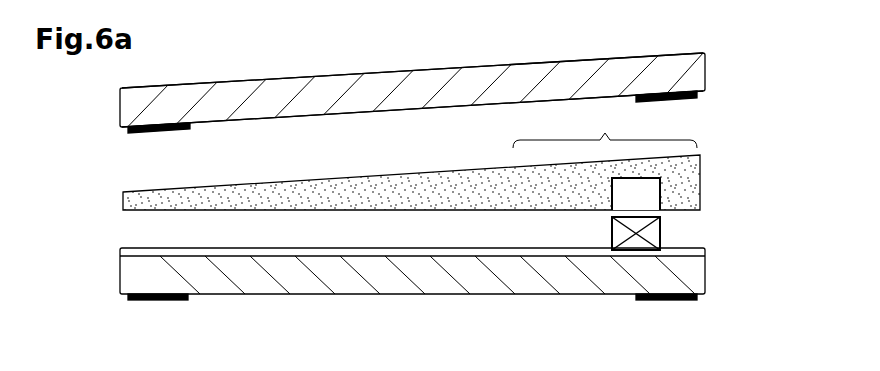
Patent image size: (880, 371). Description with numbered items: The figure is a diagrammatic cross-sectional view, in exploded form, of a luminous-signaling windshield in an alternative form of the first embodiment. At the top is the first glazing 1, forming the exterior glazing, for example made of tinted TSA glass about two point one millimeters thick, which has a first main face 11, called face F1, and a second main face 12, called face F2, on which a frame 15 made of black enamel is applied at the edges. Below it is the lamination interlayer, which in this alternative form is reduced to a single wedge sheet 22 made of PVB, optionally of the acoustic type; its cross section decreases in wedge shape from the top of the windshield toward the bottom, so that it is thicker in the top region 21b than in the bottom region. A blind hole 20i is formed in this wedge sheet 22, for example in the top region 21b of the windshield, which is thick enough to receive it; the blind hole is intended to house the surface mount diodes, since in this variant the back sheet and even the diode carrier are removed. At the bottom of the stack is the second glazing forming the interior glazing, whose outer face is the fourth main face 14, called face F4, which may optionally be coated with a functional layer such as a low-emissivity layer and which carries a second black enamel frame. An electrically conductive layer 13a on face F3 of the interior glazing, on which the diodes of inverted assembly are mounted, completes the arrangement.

The first glazing 1 is at (370, 87).
The first main face 11 is at (422, 63).
The second main face 12 is at (445, 106).
The frame 15 is at (152, 131).
The wedge sheet 22 is at (122, 202).
The top region 21b is at (605, 125).
The blind hole 20i is at (637, 192).
The thin functional layer 13a is at (707, 250).
The fourth main face 14 is at (485, 291).